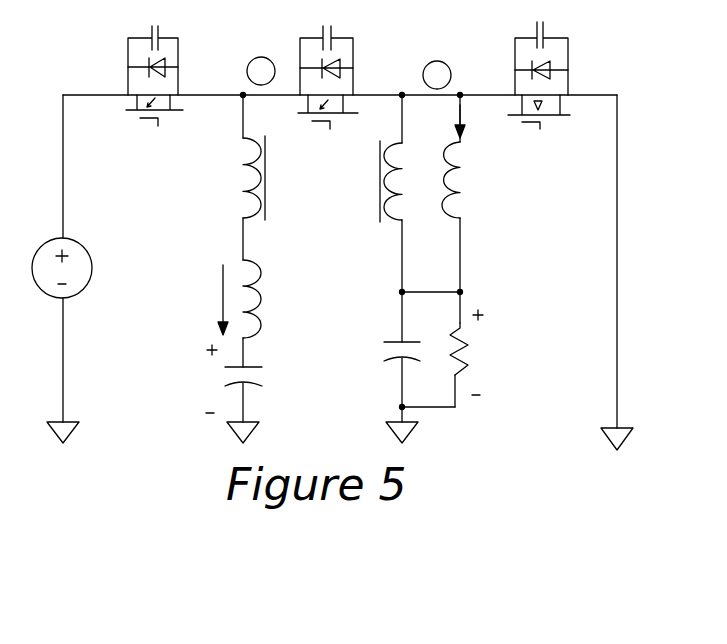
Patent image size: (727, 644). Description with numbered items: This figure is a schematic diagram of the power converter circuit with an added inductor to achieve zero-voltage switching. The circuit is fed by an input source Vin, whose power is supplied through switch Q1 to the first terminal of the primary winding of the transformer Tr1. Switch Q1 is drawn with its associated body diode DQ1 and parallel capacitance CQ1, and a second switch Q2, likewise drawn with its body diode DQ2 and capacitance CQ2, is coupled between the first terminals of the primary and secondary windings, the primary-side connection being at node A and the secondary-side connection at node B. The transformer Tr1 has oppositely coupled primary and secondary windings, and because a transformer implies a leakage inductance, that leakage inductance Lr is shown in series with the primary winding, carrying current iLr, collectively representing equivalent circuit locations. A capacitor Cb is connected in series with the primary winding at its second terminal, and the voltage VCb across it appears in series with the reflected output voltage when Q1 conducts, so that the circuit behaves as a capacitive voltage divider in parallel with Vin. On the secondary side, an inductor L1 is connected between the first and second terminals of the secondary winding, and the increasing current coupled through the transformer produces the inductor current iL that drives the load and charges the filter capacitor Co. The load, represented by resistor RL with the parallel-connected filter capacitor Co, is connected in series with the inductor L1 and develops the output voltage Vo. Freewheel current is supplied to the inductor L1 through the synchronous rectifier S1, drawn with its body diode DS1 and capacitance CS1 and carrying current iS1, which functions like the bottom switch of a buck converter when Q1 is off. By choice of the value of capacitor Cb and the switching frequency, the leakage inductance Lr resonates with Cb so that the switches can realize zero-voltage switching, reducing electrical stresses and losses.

The input voltage Vin is at (73, 285).
The capacitor of switch Q1 CQ1 is at (125, 60).
The body diode of switch Q1 DQ1 is at (173, 70).
The switch Q1 is at (159, 117).
The node A is at (261, 71).
The capacitor of switch Q2 CQ2 is at (300, 60).
The body diode of switch Q2 DQ2 is at (347, 72).
The switch Q2 is at (331, 119).
The node B is at (437, 75).
The capacitor of switch S1 CS1 is at (561, 58).
The body diode of switch S1 DS1 is at (519, 70).
The current through switch S1 iS1 is at (589, 75).
The synchronous rectifier S1 is at (545, 123).
The transformer Tr1 is at (319, 183).
The resonant inductor current iLr is at (203, 300).
The leakage inductance Lr is at (264, 299).
The capacitor Cb is at (256, 383).
The blocking capacitor voltage VCb is at (191, 379).
The inductor current iL is at (470, 129).
The inductor L1 is at (467, 180).
The filter capacitor Co is at (387, 371).
The load resistor RL is at (444, 357).
The output voltage Vo is at (485, 352).